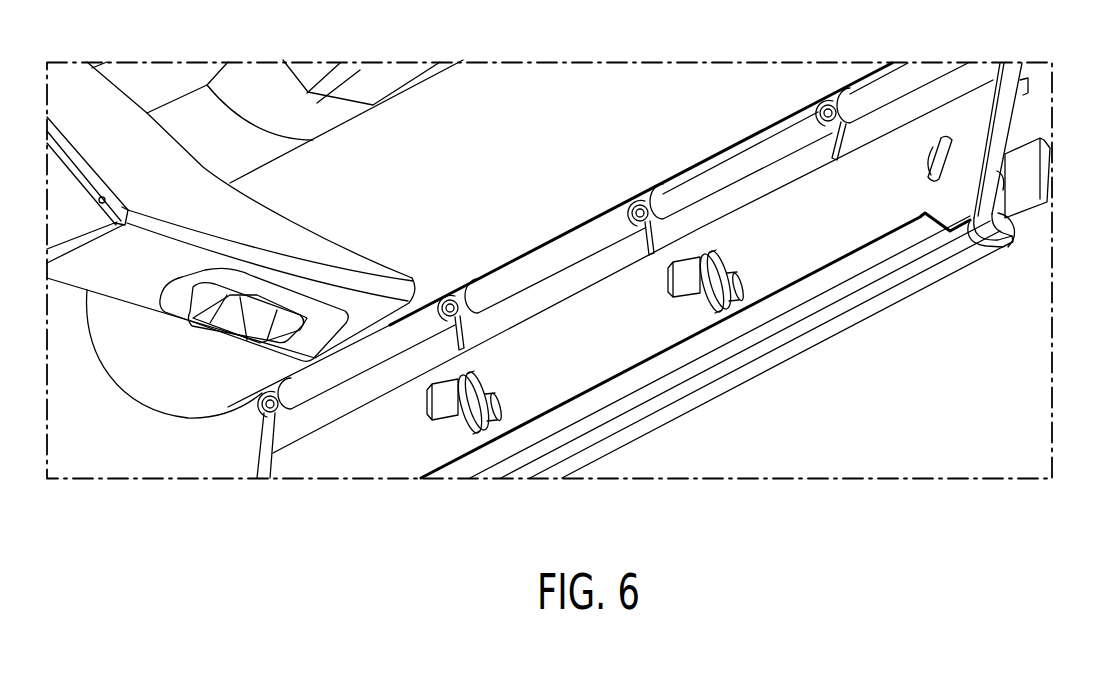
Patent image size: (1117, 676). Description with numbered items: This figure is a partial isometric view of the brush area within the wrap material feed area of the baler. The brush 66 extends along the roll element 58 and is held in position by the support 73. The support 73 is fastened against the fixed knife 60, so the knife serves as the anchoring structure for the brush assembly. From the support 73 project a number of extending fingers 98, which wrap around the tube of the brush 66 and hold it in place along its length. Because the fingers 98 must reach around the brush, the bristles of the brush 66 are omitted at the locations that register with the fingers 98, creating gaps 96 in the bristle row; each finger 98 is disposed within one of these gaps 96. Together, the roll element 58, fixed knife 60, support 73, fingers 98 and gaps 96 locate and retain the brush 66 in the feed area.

The roll element 58 is at (553, 90).
The fixed knife 60 is at (1003, 88).
The brush 66 is at (877, 93).
The support 73 is at (352, 450).
The gaps 96 is at (457, 300).
The extending fingers 98 is at (635, 253).